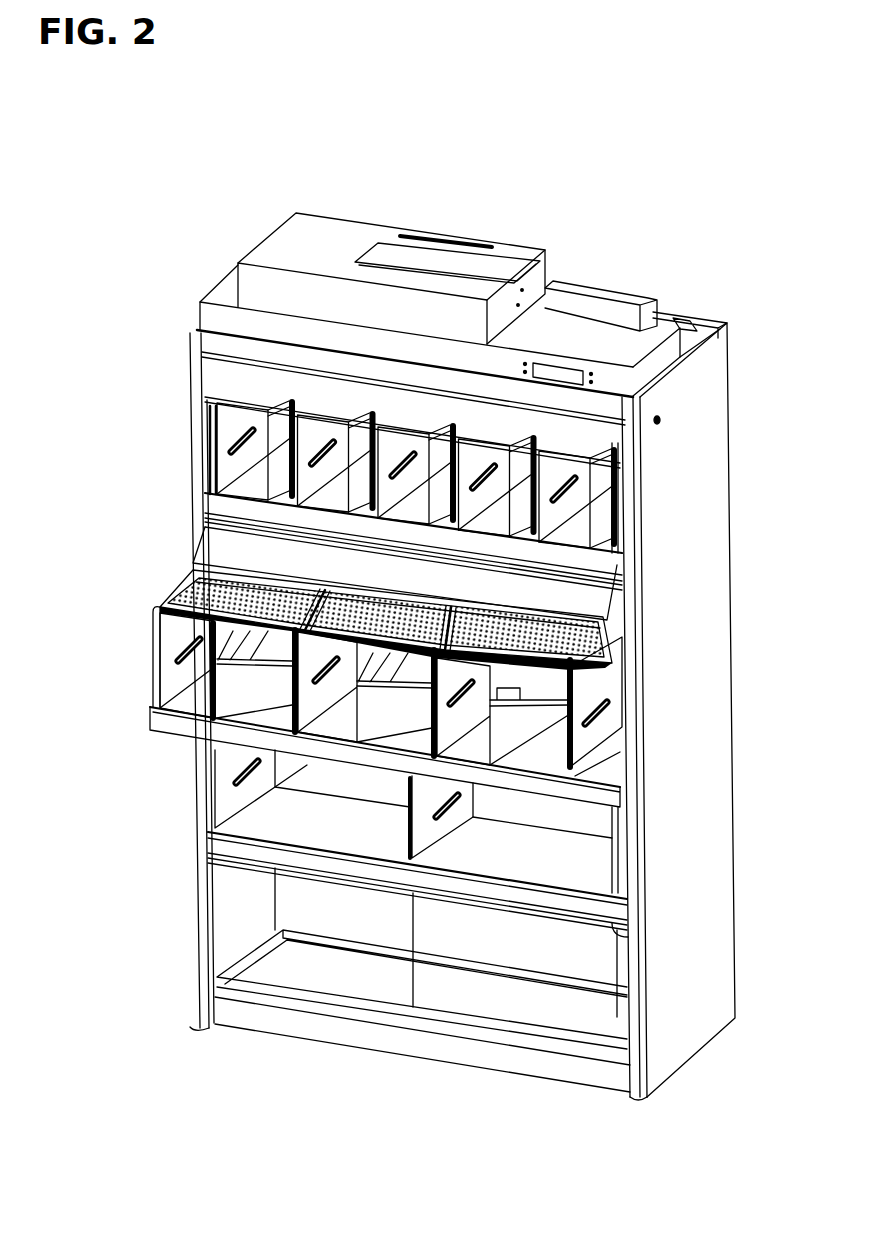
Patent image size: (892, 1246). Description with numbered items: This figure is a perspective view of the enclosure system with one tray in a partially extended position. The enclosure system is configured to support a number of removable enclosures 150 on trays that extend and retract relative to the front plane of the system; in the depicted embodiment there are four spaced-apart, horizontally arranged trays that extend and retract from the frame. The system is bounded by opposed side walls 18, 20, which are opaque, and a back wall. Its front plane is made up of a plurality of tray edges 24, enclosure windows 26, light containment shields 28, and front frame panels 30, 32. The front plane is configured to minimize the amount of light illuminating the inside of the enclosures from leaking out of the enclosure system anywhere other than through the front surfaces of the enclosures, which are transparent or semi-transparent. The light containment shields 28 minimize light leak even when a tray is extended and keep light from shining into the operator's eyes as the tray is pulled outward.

The side wall 18 is at (703, 538).
The side wall 20 is at (208, 279).
The tray edge 24 is at (162, 722).
The enclosure window 26 is at (235, 907).
The light containment shield 28 is at (206, 548).
The front frame panel 30 is at (246, 1015).
The front frame panel 32 is at (217, 347).
The removable enclosure 150 is at (598, 683).